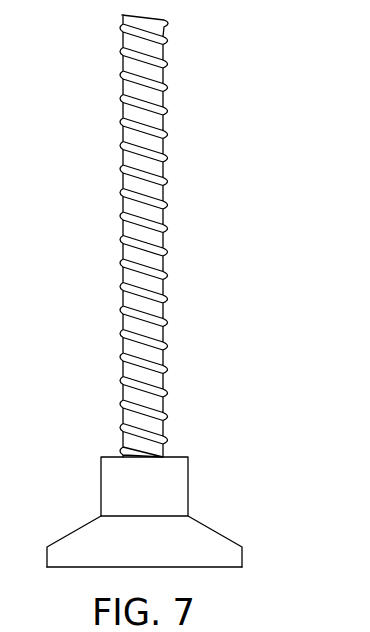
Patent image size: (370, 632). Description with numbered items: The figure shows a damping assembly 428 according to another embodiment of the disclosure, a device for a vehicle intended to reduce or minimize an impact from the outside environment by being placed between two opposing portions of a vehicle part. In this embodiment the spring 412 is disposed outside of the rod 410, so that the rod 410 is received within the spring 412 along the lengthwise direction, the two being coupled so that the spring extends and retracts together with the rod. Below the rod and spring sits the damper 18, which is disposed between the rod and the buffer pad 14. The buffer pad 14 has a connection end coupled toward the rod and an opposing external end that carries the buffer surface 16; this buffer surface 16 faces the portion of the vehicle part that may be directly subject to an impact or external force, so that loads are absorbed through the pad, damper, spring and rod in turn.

The damping assembly 428 is at (193, 236).
The spring 412 is at (165, 233).
The shaft 410 is at (186, 236).
The damper 18 is at (165, 477).
The buffer pad 14 is at (171, 535).
The buffer surface 16 is at (212, 567).